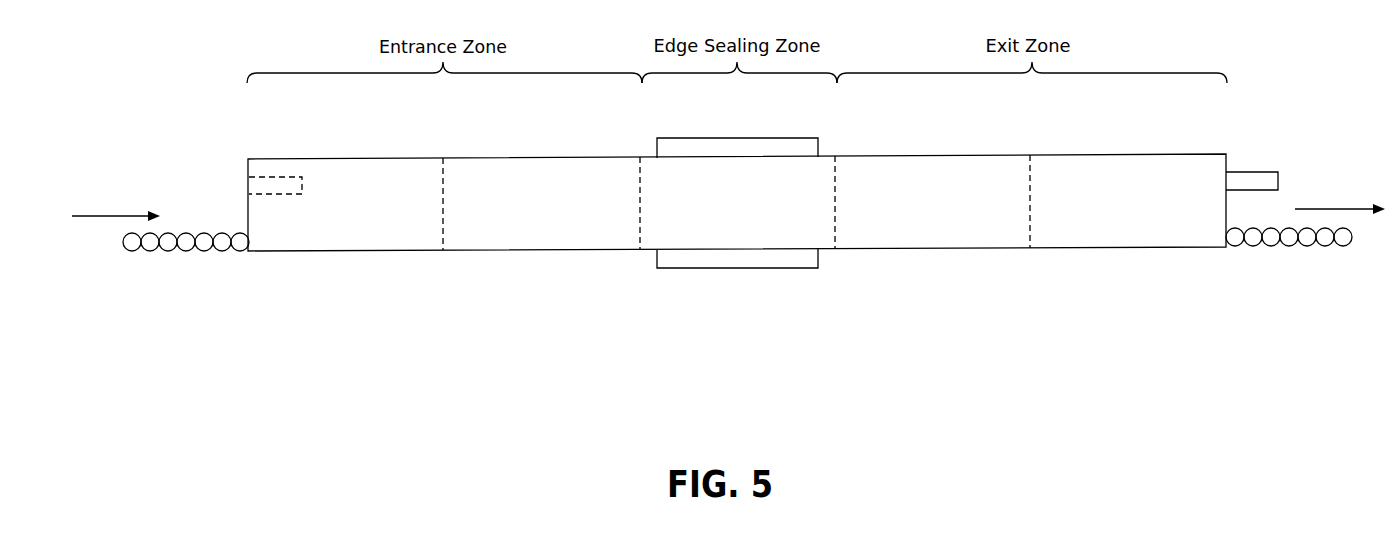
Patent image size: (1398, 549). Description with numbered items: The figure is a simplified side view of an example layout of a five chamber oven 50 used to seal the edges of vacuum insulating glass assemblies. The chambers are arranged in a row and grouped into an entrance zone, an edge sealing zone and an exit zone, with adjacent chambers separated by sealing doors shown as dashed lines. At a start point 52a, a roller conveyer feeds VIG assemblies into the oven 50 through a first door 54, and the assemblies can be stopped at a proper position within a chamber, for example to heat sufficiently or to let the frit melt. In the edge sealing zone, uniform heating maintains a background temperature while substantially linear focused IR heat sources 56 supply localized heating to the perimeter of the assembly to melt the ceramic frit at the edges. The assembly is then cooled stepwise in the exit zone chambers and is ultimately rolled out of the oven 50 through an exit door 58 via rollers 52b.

The five chamber oven 50 is at (426, 348).
The start point of roller conveyer 52a is at (203, 252).
The rollers 52b is at (1287, 247).
The first door 54 is at (277, 176).
The linear focused IR heat sources 56 is at (737, 269).
The exit door 58 is at (1252, 171).